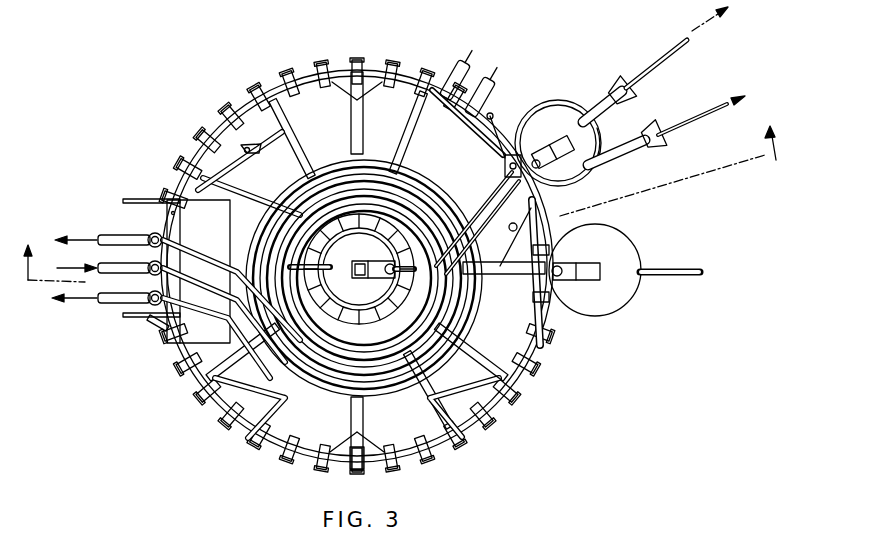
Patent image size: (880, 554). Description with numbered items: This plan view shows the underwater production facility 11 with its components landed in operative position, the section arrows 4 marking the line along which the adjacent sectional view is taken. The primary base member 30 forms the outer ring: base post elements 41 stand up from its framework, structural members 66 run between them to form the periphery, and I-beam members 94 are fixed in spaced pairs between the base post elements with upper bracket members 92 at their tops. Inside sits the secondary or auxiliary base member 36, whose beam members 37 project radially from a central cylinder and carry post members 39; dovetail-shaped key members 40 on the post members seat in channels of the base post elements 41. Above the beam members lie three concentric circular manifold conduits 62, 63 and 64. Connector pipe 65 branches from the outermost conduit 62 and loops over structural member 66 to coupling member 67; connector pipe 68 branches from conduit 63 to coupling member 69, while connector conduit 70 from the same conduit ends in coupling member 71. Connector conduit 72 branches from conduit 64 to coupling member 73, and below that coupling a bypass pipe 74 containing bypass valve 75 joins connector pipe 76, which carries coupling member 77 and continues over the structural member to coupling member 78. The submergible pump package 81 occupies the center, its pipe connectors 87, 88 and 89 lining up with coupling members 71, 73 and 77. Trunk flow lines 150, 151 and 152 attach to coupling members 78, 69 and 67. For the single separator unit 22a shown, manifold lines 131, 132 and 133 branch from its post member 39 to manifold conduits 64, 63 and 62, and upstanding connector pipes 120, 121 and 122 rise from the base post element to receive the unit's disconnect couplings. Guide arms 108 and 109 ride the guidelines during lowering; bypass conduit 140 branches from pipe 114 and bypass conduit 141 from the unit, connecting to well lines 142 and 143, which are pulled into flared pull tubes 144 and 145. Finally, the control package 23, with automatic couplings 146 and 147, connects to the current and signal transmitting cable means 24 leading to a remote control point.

The underwater production facility 11 is at (503, 412).
The primary base member 30 is at (405, 56).
The post members 39 is at (284, 104).
The dovetail-shaped key members 40 is at (297, 86).
The base post elements 41 is at (263, 92).
The I-beam members 94 is at (395, 62).
The upper bracket members 92 is at (440, 62).
The secondary or auxiliary base member 36 is at (385, 154).
The connector pipe 76 is at (384, 398).
The beam members 37 is at (276, 144).
The manifold conduit 62 is at (300, 172).
The pipe connector 88 is at (416, 180).
The connector conduit 72 is at (268, 360).
The coupling member 77 is at (440, 376).
The connector pipe 65 is at (496, 313).
The submergible pump package 81 is at (349, 254).
The pipe connector 89 is at (382, 300).
The manifold conduit 64 is at (346, 166).
The pipe connector 87 is at (376, 175).
The coupling member 71 is at (395, 176).
The coupling member 73 is at (460, 278).
The bypass pipe 74 is at (468, 292).
The bypass valve 75 is at (471, 308).
The manifold conduit 63 is at (432, 206).
The connector pipe 68 is at (450, 357).
The structural members 66 is at (185, 214).
The connector conduit 70 is at (217, 271).
The coupling member 69 is at (184, 250).
The coupling member 78 is at (148, 236).
The coupling member 67 is at (150, 318).
The trunk flow line 150 is at (100, 236).
The trunk flow line 151 is at (100, 268).
The trunk flow line 152 is at (100, 306).
The manifold line 132 is at (538, 232).
The manifold line 133 is at (491, 274).
The manifold line 131 is at (470, 186).
The automatic coupling 146 is at (552, 253).
The automatic coupling 147 is at (556, 302).
The control package 23 is at (586, 302).
The current and signal transmitting cable means 24 is at (680, 268).
The guide arm 108 is at (519, 138).
The bypass conduit 141 is at (540, 172).
The bypass conduit 140 is at (536, 150).
The separator unit 22a is at (573, 154).
The guide arm 109 is at (556, 191).
The pipe 114 is at (572, 102).
The pull tube 144 is at (637, 96).
The well line 142 is at (656, 58).
The pull tube 145 is at (650, 132).
The well line 143 is at (724, 104).
The upstanding connector pipe 121 is at (463, 70).
The upstanding connector pipe 120 is at (478, 82).
The upstanding connector pipe 122 is at (490, 106).
The section line 4- 4 is at (399, 193).